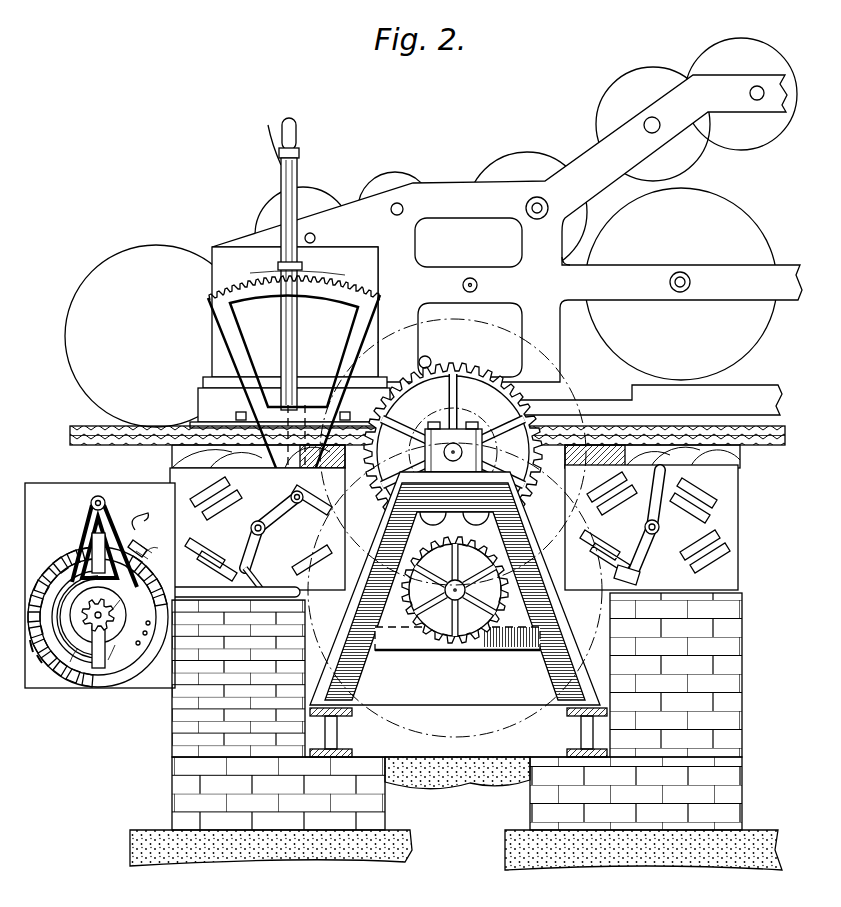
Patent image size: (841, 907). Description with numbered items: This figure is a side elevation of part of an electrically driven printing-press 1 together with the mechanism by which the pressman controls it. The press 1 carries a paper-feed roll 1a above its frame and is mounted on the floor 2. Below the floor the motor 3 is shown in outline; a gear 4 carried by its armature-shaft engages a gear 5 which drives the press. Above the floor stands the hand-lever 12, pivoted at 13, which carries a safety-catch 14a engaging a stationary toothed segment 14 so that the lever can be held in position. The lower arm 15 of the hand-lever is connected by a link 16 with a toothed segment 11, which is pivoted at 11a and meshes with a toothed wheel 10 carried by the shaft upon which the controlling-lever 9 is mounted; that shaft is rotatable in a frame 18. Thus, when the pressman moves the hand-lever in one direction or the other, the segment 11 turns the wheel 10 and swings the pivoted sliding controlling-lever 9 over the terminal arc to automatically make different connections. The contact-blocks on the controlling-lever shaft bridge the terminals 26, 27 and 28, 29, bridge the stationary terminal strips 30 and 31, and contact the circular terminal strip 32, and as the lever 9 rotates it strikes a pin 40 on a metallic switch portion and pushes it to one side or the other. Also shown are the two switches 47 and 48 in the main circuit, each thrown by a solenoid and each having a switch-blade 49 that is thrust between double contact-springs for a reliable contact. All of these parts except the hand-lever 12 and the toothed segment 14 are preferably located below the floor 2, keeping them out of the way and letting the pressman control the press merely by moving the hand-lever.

The printing-press 1 is at (507, 228).
The paper-feed roll 1a is at (212, 268).
The floor 2 is at (682, 422).
The motor 3 is at (515, 716).
The gear 4 is at (455, 643).
The gear 5 is at (522, 484).
The controlling-lever 9 is at (90, 636).
The toothed wheel 10 is at (83, 590).
The toothed segment 11 is at (92, 521).
The pivot 11a is at (105, 503).
The hand-lever 12 is at (297, 343).
The pivot 13 is at (313, 458).
The stationary toothed segment 14 is at (328, 290).
The safety-catch 14a is at (250, 273).
The lower arm 15 is at (252, 566).
The link 16 is at (186, 590).
The frame 18 is at (145, 547).
The terminal 26 is at (34, 655).
The terminal 27 is at (44, 662).
The terminal 28 is at (150, 548).
The terminal 29 is at (153, 554).
The stationary terminal strip 30 is at (72, 660).
The stationary terminal strip 31 is at (110, 660).
The circular terminal strip 32 is at (113, 610).
The pin 40 is at (150, 516).
The switch 47 is at (251, 529).
The switch 48 is at (660, 528).
The switch-blade 49 is at (273, 472).